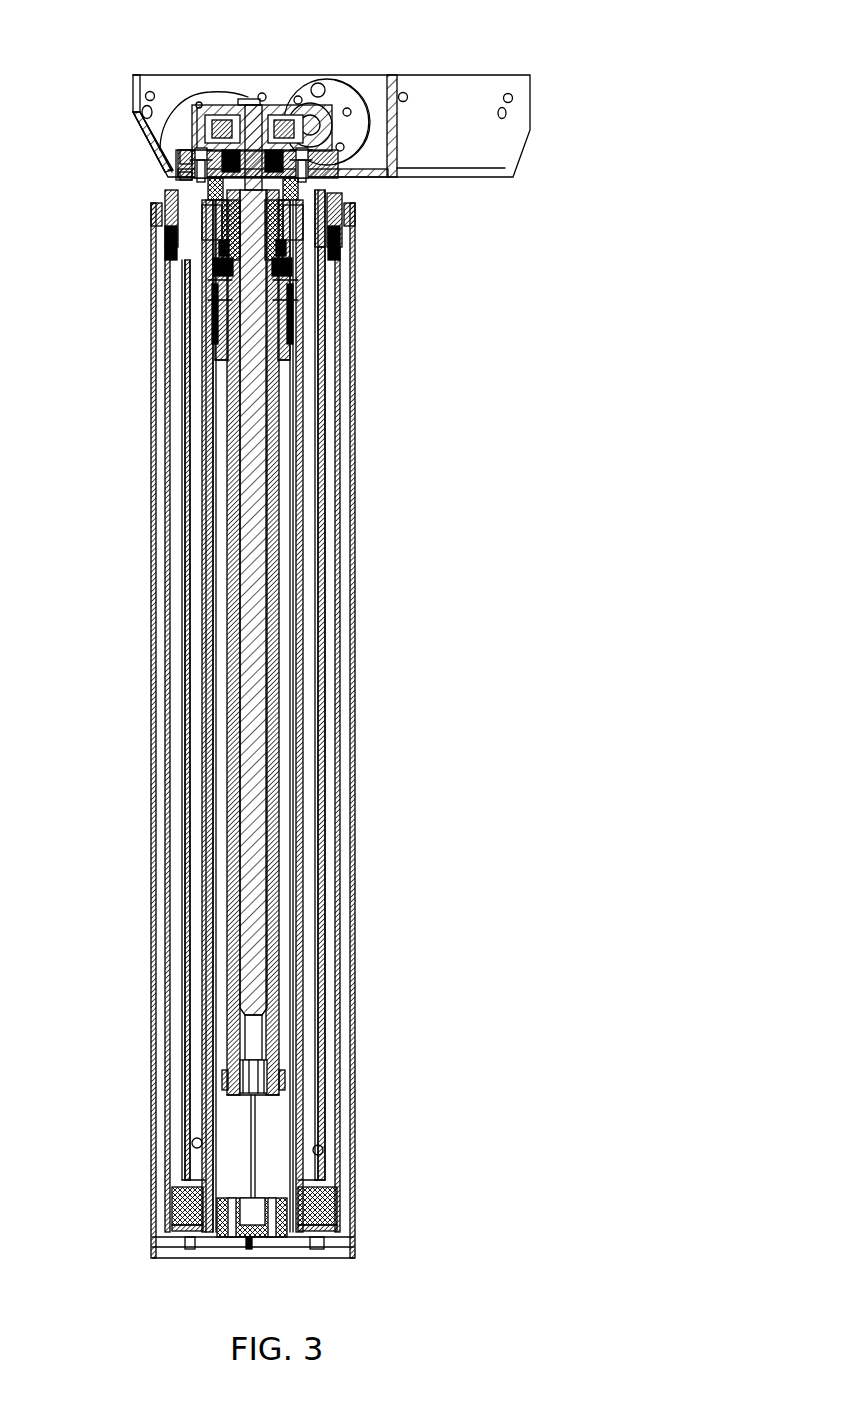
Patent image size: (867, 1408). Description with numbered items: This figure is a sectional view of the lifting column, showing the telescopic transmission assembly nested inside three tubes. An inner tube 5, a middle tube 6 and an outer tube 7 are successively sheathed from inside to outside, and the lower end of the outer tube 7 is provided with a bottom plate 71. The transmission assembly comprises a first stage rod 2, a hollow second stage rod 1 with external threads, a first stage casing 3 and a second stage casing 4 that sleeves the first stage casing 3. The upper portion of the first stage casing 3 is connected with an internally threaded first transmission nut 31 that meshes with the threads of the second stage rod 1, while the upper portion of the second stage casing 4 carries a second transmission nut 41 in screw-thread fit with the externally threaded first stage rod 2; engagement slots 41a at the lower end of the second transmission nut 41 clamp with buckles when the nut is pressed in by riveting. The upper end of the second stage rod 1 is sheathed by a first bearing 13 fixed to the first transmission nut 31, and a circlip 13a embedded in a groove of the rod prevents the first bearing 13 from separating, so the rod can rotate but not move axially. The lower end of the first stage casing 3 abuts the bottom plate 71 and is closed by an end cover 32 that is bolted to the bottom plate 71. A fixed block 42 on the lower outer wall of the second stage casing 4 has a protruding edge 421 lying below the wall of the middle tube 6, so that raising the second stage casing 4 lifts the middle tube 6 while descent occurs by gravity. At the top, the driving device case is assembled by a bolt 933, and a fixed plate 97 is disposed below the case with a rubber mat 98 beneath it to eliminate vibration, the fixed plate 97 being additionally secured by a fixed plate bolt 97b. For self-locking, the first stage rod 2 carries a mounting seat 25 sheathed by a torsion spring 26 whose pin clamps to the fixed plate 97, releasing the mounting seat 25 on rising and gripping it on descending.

The second stage rod 1 is at (268, 663).
The first stage rod 2 is at (262, 592).
The first stage casing 3 is at (302, 466).
The second stage casing 4 is at (302, 508).
The inner tube 5 is at (322, 916).
The middle tube 6 is at (340, 958).
The outer tube 7 is at (355, 1014).
The first bearing 13 is at (295, 267).
The circlip 13a is at (295, 253).
The mounting seat 25 is at (280, 182).
The torsion spring 26 is at (225, 183).
The first transmission nut 31 is at (297, 322).
The end cover 32 is at (283, 1198).
The second transmission nut 41 is at (303, 210).
The engagement slots 41a is at (250, 277).
The fixed block 42 is at (340, 1205).
The protruding edge 421 is at (338, 1225).
The bottom plate 71 is at (342, 1243).
The fixed plate 97 is at (178, 165).
The fixed plate bolt 97b is at (186, 163).
The rubber mat 98 is at (182, 152).
The bolt 933 is at (199, 105).